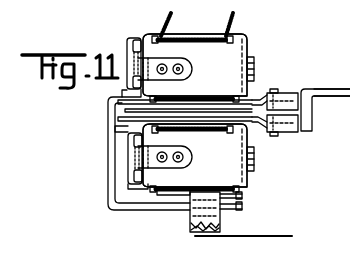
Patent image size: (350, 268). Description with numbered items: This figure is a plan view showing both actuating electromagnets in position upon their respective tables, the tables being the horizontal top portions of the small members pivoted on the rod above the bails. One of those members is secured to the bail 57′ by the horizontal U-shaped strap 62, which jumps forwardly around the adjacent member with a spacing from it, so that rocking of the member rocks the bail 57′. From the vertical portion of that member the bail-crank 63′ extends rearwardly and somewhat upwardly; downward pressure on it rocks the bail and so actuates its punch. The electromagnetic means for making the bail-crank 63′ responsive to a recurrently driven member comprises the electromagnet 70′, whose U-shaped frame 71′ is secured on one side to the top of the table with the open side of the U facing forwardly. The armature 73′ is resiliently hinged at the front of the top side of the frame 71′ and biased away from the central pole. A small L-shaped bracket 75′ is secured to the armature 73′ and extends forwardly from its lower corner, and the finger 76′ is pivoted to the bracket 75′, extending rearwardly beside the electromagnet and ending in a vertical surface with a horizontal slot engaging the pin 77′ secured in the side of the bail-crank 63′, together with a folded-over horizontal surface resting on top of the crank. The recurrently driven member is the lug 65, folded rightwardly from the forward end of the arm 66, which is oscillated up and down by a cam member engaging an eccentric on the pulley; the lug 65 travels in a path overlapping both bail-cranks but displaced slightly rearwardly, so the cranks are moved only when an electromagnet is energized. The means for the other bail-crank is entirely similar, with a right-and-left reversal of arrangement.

The electromagnet 70′ is at (259, 28).
The U-shaped frame 71′ is at (242, 48).
The finger 76′ is at (208, 97).
The armature 73′ is at (134, 38).
The L-shaped bracket 75′ is at (113, 89).
The horizontal U-shaped strap 62 is at (110, 173).
The bail-crank 63′ is at (265, 99).
The pin 77′ is at (279, 92).
The lug 65 is at (312, 118).
The arm 66 is at (331, 96).
The bail 57′ is at (192, 228).